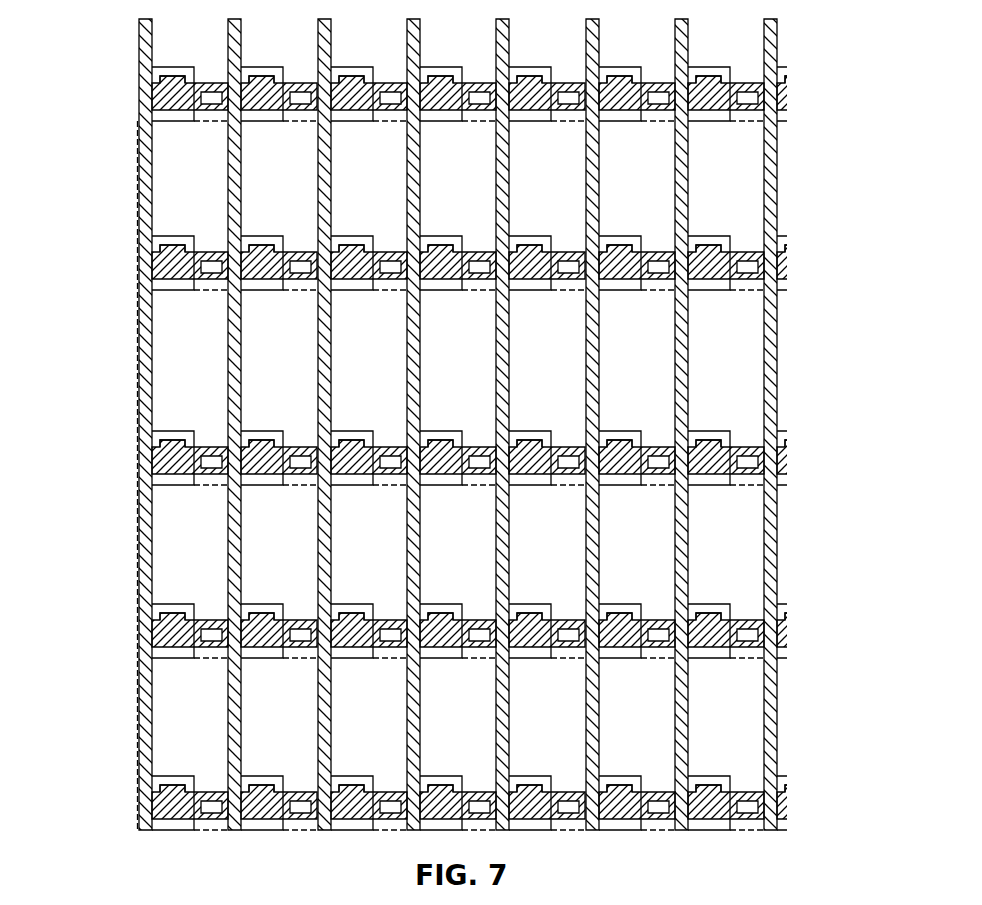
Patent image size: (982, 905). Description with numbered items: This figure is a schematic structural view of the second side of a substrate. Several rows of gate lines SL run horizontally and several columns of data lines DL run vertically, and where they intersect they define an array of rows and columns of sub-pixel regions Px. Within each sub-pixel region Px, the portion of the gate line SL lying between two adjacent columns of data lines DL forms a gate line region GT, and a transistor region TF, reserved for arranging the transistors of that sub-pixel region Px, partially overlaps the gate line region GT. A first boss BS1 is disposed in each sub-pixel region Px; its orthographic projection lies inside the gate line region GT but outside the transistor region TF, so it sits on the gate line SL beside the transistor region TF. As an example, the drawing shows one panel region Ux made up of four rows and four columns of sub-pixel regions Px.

The gate line SL is at (747, 254).
The gate line region GT is at (158, 438).
The first boss BS1 is at (748, 633).
The transistor region TF is at (177, 651).
The panel region Ux is at (407, 165).
The sub-pixel region Px is at (138, 212).
The data line DL is at (138, 340).